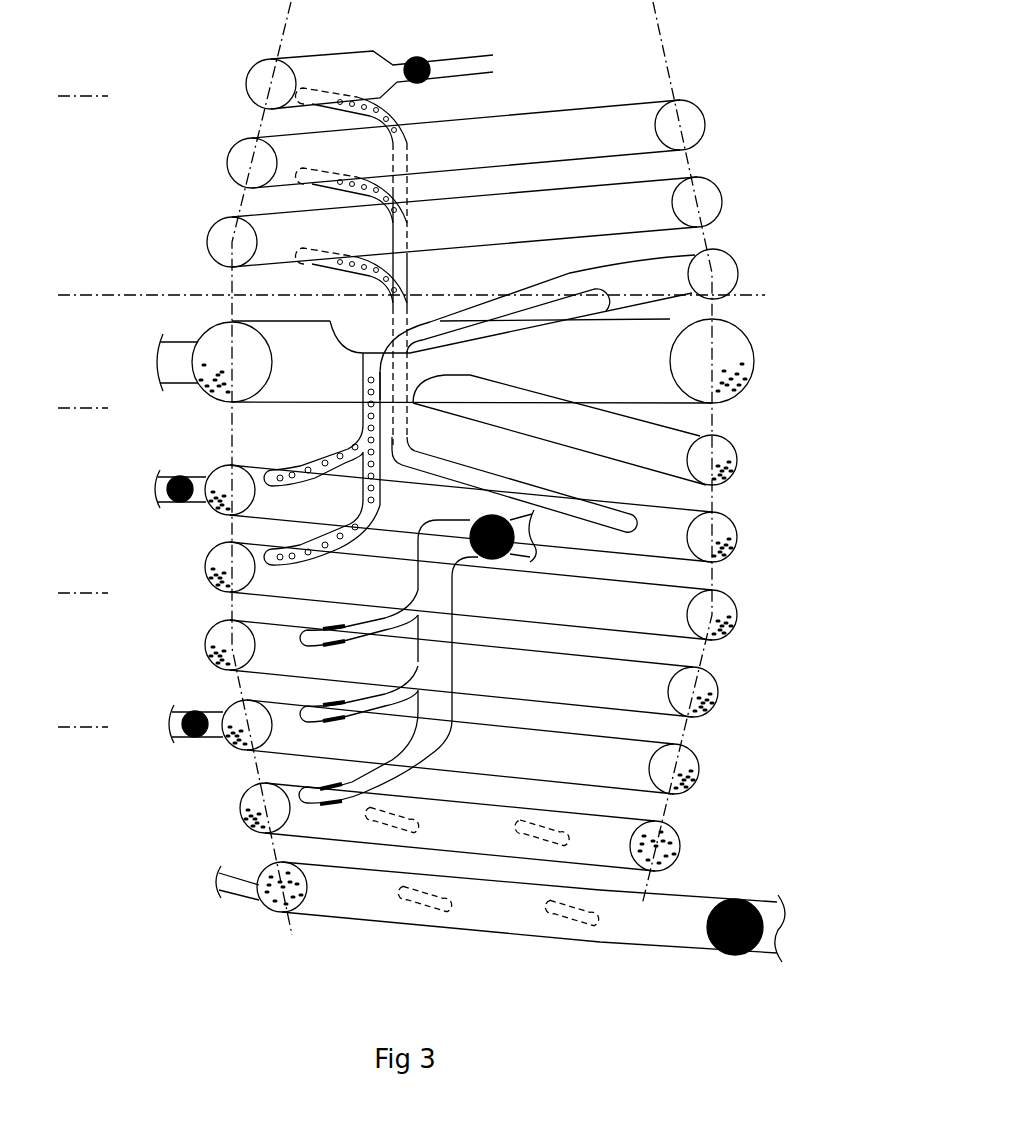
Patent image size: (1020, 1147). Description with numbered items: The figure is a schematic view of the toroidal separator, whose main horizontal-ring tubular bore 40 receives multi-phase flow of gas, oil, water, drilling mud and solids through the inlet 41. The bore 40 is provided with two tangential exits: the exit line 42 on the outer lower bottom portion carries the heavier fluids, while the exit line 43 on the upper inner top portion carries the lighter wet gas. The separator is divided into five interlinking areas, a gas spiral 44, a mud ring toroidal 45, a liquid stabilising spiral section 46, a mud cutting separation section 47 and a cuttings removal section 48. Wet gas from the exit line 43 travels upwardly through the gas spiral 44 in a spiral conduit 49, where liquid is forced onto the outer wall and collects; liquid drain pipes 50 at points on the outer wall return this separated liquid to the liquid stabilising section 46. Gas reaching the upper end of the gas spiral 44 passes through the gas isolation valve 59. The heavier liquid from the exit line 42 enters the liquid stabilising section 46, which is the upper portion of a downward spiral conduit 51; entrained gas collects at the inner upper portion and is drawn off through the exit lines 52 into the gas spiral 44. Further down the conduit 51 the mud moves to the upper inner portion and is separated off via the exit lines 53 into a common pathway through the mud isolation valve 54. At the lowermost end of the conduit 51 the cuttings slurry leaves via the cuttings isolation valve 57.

The tubular bore 40 is at (740, 390).
The inlet 41 is at (184, 388).
The exit line 42 is at (684, 433).
The exit line 43 is at (722, 203).
The gas spiral 44 is at (74, 108).
The mud ring toroidal 45 is at (74, 310).
The liquid stabilising spiral section 46 is at (74, 422).
The mud cutting separation section 47 is at (74, 608).
The cuttings removal section 48 is at (74, 742).
The spiral conduit 49 is at (660, 178).
The liquid drain pipes 50 is at (383, 113).
The spiral conduit 51 is at (684, 515).
The exit lines 52 is at (360, 413).
The exit lines 53 is at (344, 620).
The mud isolation valve 54 is at (534, 545).
The cuttings isolation valve 57 is at (740, 897).
The gas isolation valve 59 is at (427, 58).